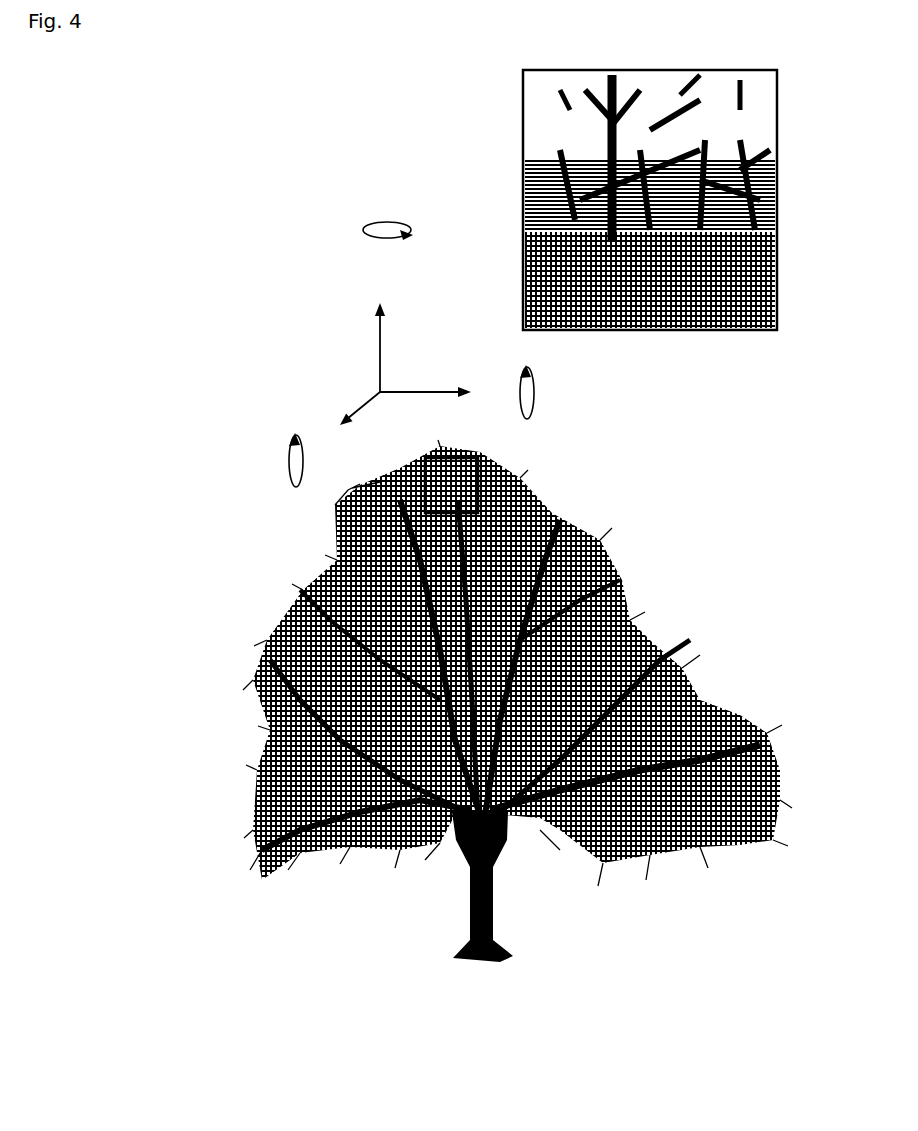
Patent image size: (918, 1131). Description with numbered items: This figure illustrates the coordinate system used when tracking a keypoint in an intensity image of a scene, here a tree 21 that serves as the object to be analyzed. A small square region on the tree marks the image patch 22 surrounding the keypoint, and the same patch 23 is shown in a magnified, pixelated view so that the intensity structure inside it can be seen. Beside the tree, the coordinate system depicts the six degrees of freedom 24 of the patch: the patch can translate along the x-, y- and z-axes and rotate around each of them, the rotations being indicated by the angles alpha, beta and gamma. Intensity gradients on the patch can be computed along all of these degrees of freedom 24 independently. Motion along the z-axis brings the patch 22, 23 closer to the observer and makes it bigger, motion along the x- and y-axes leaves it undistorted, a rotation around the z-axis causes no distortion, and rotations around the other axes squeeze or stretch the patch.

The tree (object to be modeled) 21 is at (303, 607).
The patch 22 is at (487, 468).
The patch 23 is at (516, 108).
The degrees of freedom 24 is at (353, 372).